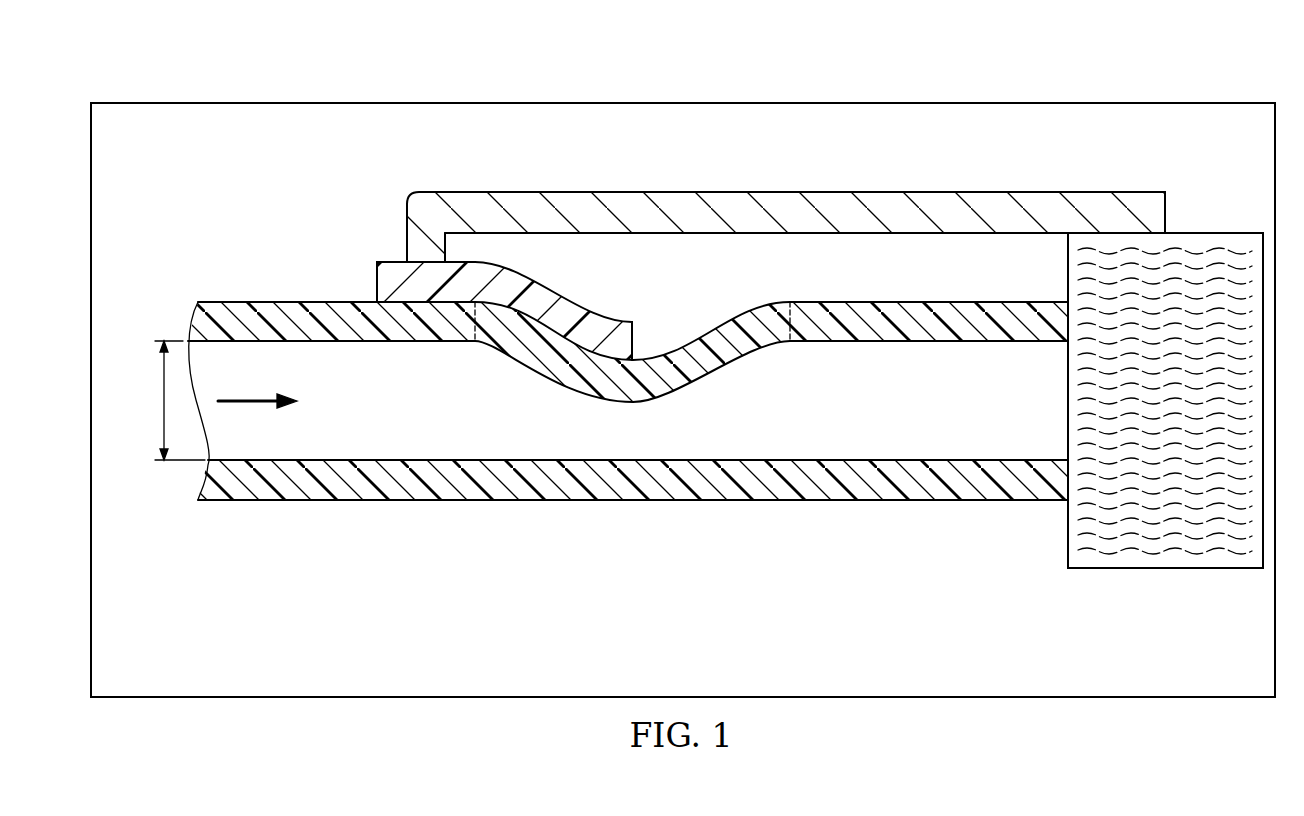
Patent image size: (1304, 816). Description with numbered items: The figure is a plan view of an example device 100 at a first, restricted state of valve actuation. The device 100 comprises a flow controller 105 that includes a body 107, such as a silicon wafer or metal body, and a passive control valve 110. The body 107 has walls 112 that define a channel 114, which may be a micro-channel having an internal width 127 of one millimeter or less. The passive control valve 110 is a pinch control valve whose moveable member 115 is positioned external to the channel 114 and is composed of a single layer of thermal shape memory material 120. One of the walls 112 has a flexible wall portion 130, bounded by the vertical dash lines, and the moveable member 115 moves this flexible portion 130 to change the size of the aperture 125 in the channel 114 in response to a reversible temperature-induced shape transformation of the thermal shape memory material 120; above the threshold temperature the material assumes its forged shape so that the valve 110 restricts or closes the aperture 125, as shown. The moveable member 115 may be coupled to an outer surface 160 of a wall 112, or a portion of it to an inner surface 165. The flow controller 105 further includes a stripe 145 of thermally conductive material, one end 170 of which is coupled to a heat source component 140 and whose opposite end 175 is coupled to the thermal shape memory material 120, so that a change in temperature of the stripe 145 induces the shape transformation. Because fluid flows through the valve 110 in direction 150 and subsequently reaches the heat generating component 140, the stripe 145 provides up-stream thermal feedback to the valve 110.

The device 100 is at (347, 61).
The flow controller 105 is at (1044, 97).
The body 107 is at (663, 612).
The passive control valve 110 is at (270, 208).
The walls 112 is at (847, 332).
The channel 114 is at (945, 415).
The moveable member 115 is at (368, 276).
The thermal shape memory material 120 is at (607, 325).
The aperture 125 is at (577, 428).
The internal width 127 is at (162, 402).
The flexible wall portion 130 is at (705, 345).
The heat source component 140 is at (1175, 570).
The stripe 145 is at (780, 202).
The direction 150 is at (258, 404).
The outer surface 160 is at (343, 502).
The inner surface 165 is at (357, 457).
The end 170 is at (1167, 210).
The opposite end 175 is at (406, 243).